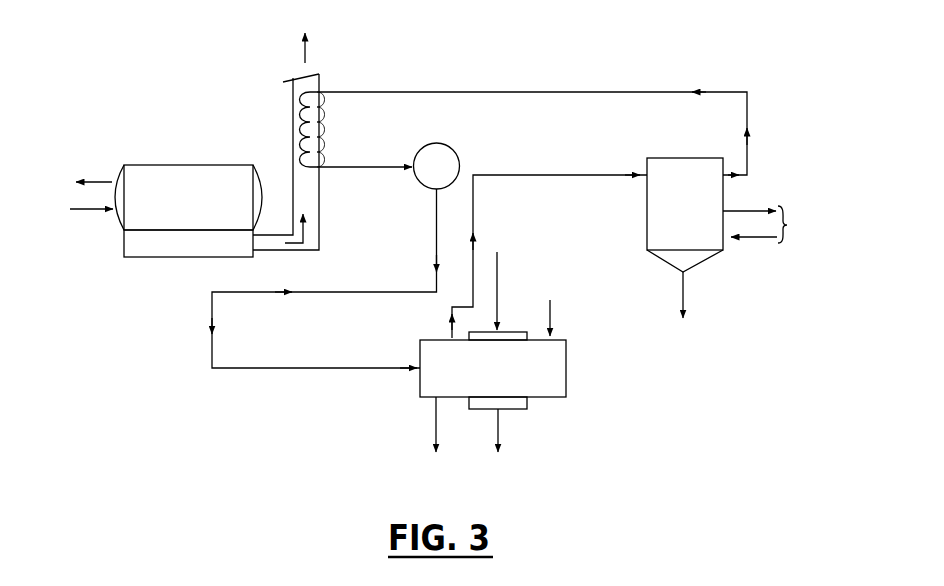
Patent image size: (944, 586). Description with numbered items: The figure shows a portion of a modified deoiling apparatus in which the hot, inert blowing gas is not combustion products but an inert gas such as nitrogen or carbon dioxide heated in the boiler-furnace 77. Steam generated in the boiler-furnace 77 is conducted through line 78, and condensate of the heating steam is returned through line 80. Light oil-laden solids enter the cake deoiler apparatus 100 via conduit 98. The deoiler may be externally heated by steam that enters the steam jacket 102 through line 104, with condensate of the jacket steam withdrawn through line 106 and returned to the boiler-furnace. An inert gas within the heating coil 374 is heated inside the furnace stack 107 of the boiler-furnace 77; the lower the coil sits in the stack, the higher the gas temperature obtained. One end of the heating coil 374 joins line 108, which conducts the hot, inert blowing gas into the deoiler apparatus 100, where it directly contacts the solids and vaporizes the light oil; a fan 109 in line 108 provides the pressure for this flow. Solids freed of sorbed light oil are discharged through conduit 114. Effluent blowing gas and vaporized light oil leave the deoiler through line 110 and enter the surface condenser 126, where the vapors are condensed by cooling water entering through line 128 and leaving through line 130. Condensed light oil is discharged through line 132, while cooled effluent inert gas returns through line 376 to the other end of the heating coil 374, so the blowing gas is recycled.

The boiler-furnace 77 is at (213, 173).
The line 78 is at (96, 181).
The line 80 is at (96, 211).
The furnace stack 107 is at (293, 98).
The heating coil 374 is at (312, 106).
The line 376 is at (413, 92).
The fan 109 is at (416, 152).
The line 108 is at (435, 252).
The line 110 is at (450, 318).
The line 104 is at (499, 261).
The conduit 98 is at (552, 317).
The cake deoiler apparatus 100 is at (550, 371).
The steam jacket 102 is at (527, 401).
The line 106 is at (500, 421).
The conduit 114 is at (436, 425).
The surface condenser 126 is at (656, 259).
The line 128 is at (753, 240).
The line 130 is at (752, 210).
The line 132 is at (686, 298).